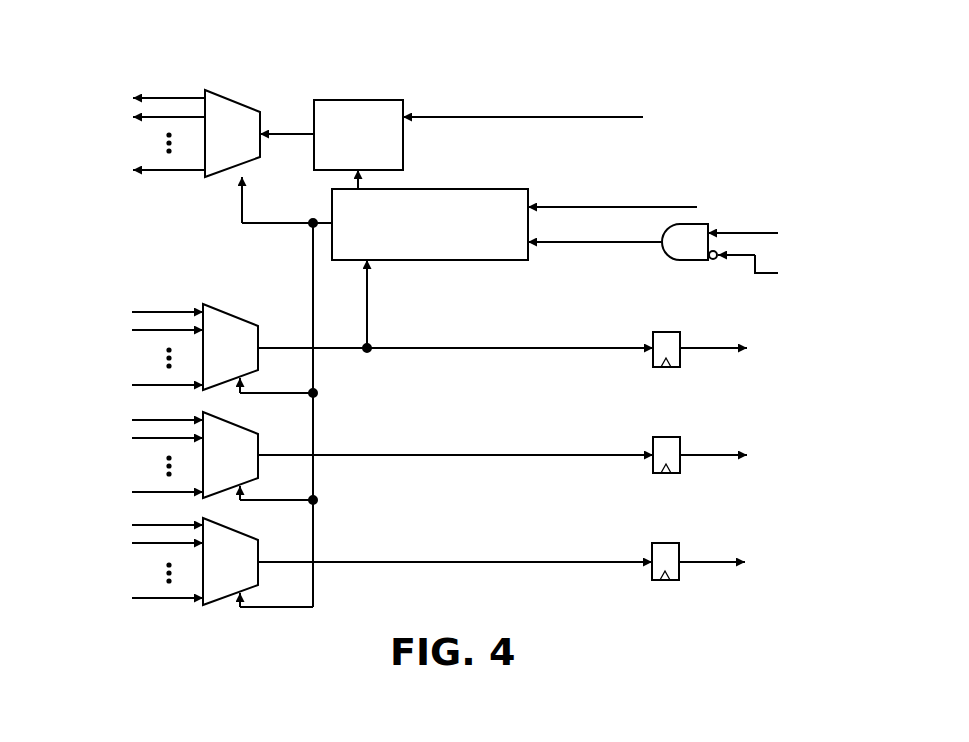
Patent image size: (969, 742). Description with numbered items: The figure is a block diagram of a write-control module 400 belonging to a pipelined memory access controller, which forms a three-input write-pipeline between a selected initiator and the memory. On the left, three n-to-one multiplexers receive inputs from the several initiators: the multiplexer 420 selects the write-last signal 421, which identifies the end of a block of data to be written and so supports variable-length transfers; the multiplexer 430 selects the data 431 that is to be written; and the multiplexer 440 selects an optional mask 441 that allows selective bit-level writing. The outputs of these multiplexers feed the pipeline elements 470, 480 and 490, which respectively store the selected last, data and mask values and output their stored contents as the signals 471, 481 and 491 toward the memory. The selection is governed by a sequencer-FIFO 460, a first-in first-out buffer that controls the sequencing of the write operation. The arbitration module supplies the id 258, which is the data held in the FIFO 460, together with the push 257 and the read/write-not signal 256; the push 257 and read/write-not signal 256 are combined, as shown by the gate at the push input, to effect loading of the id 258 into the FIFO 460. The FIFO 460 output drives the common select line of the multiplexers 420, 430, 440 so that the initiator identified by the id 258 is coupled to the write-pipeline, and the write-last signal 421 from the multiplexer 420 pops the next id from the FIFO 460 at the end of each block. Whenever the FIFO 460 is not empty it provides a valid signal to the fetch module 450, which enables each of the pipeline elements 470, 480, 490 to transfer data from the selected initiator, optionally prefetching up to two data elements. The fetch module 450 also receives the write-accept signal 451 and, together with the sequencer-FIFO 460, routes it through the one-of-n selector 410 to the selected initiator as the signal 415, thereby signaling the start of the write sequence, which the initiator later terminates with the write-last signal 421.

The write-control module 400 is at (438, 519).
The 1-of-n selector 410 is at (233, 103).
The write-accept signal to initiator 415 is at (134, 114).
The write-last multiplexer 420 is at (222, 312).
The write-last signal 421 is at (130, 330).
The write-data multiplexer 430 is at (222, 420).
The write data 431 is at (130, 437).
The write-mask multiplexer 440 is at (222, 528).
The write mask 441 is at (130, 543).
The fetch module 450 is at (362, 100).
The write-accept signal 451 is at (708, 98).
The sequencer-FIFO 460 is at (430, 260).
The id 258 is at (706, 188).
The push signal 257 is at (790, 215).
The read/write-not signal 256 is at (815, 260).
The write-last pipeline element 470 is at (680, 332).
The write-last output signal 471 is at (815, 330).
The write-data pipeline element 480 is at (680, 437).
The write-data output signal 481 is at (820, 437).
The write-mask pipeline element 490 is at (680, 543).
The write-mask output signal 491 is at (815, 545).